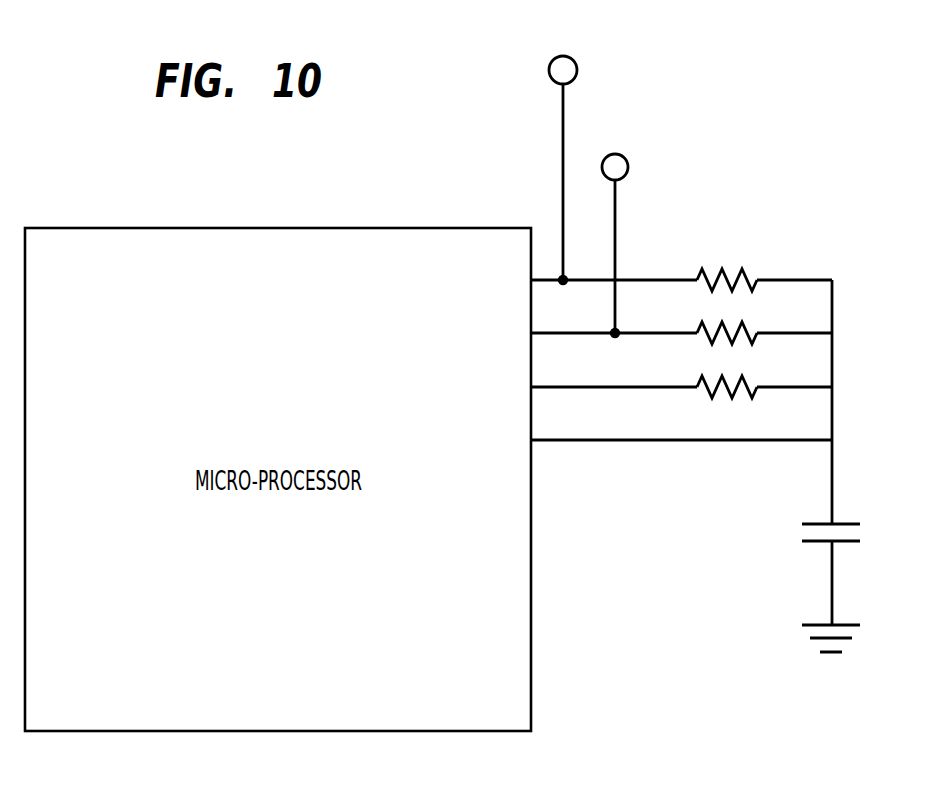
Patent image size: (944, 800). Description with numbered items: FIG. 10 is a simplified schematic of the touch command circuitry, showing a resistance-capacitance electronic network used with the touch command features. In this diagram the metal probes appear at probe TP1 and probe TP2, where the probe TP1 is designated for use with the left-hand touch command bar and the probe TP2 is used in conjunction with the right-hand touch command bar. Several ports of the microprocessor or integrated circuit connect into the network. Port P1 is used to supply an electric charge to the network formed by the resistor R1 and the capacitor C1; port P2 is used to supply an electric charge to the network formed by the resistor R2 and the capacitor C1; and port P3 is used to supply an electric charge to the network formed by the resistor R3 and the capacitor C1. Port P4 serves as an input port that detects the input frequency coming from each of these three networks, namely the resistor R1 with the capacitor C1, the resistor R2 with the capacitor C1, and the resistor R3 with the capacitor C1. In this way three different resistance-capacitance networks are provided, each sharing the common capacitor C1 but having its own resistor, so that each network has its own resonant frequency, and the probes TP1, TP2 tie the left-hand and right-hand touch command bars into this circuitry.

The probe TP1 is at (564, 155).
The probe TP2 is at (614, 232).
The resistor R1 is at (715, 270).
The resistor R2 is at (715, 323).
The resistor R3 is at (715, 377).
The capacitor C1 is at (844, 587).
The port P1 is at (664, 280).
The port P2 is at (664, 333).
The port P3 is at (664, 387).
The port P4 is at (664, 440).